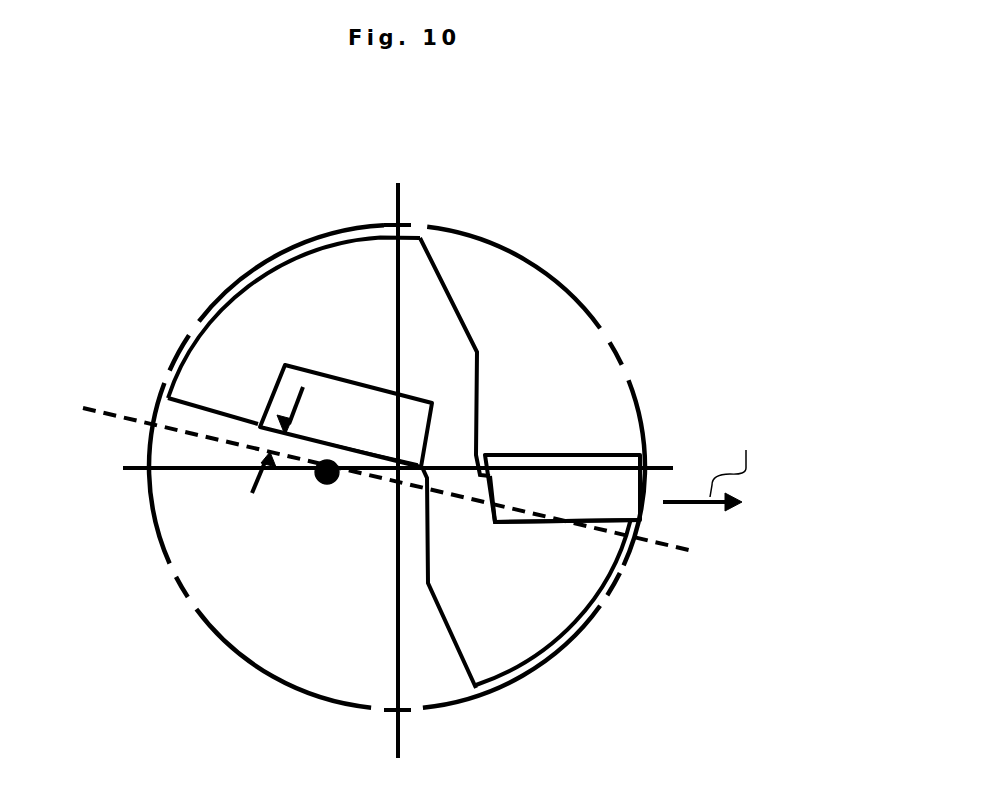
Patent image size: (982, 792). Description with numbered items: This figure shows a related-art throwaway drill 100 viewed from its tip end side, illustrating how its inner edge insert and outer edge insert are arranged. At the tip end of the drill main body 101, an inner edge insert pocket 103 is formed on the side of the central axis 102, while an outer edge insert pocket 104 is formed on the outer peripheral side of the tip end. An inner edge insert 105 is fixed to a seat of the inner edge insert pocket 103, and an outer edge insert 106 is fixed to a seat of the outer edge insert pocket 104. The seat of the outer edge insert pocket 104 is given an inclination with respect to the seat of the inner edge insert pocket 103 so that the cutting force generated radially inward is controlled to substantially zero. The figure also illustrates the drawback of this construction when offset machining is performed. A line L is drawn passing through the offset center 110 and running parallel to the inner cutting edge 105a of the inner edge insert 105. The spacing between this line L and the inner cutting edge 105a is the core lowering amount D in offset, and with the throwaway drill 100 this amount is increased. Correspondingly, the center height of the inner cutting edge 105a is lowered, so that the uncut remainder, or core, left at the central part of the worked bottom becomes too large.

The throwaway drill 100 is at (468, 283).
The drill main body 101 is at (458, 357).
The central axis 102 is at (375, 478).
The inner edge insert pocket 103 is at (354, 391).
The outer edge insert pocket 104 is at (582, 522).
The inner edge insert 105 is at (280, 400).
The inner cutting edge 105a is at (307, 443).
The outer edge insert 106 is at (572, 483).
The offset center 110 is at (323, 487).
The line L is at (112, 415).
The core lowering amount D is at (272, 441).